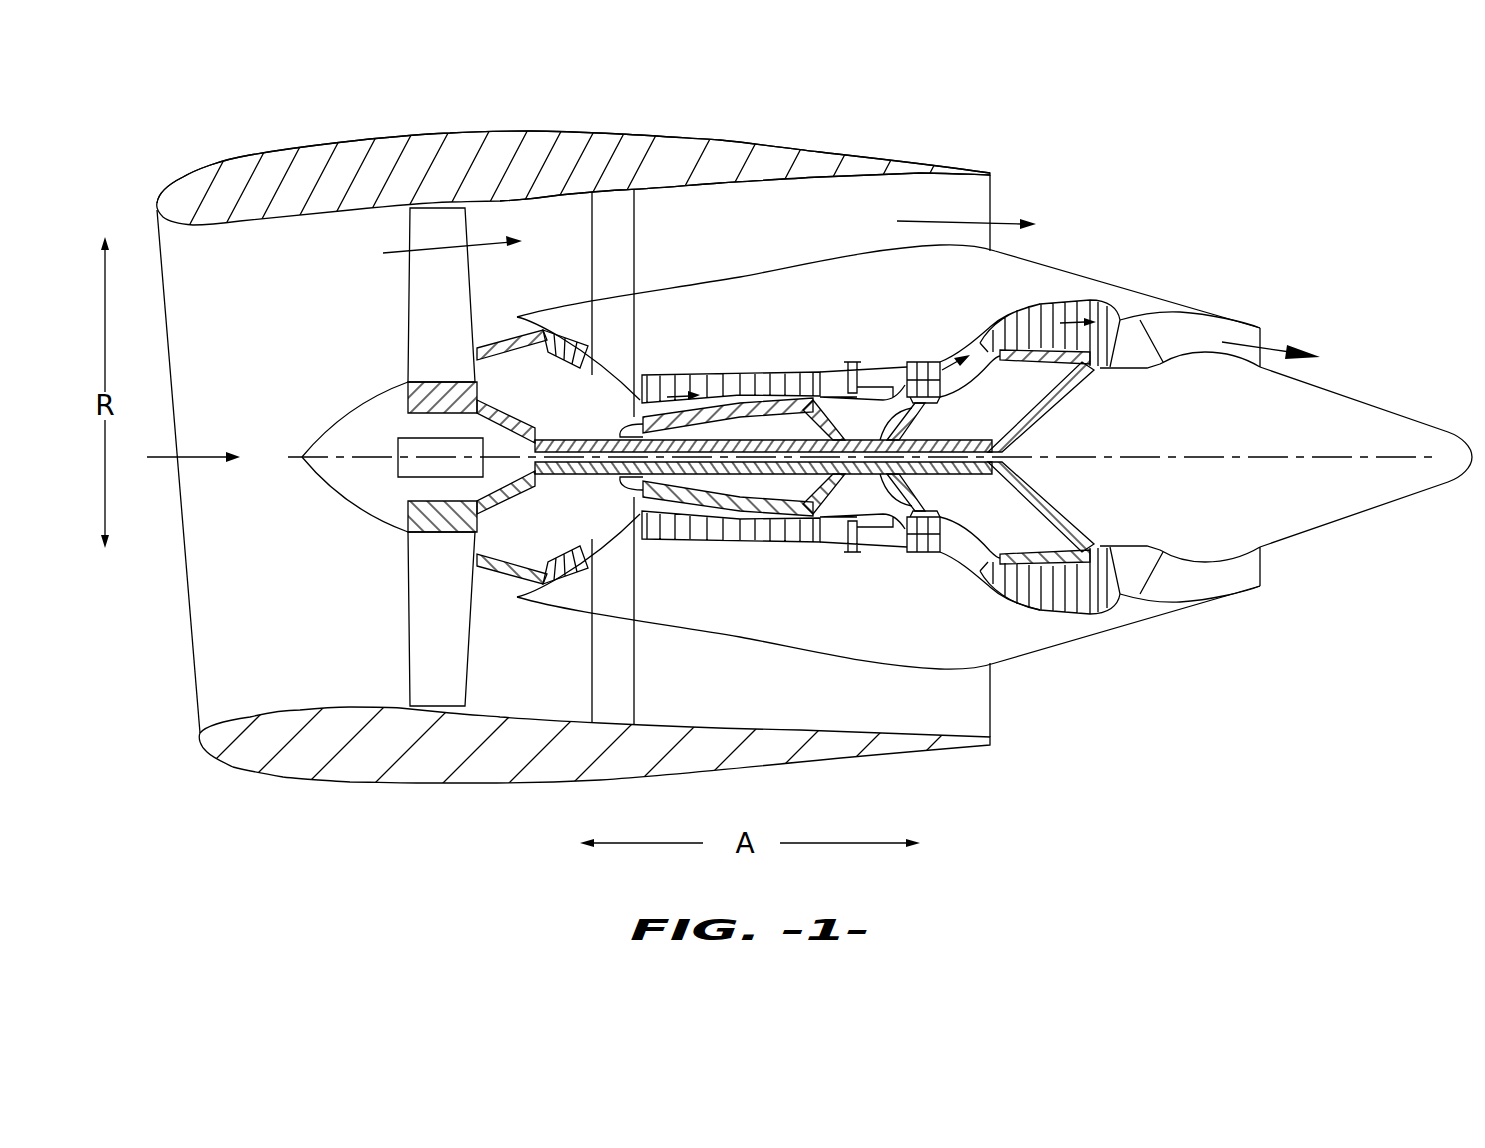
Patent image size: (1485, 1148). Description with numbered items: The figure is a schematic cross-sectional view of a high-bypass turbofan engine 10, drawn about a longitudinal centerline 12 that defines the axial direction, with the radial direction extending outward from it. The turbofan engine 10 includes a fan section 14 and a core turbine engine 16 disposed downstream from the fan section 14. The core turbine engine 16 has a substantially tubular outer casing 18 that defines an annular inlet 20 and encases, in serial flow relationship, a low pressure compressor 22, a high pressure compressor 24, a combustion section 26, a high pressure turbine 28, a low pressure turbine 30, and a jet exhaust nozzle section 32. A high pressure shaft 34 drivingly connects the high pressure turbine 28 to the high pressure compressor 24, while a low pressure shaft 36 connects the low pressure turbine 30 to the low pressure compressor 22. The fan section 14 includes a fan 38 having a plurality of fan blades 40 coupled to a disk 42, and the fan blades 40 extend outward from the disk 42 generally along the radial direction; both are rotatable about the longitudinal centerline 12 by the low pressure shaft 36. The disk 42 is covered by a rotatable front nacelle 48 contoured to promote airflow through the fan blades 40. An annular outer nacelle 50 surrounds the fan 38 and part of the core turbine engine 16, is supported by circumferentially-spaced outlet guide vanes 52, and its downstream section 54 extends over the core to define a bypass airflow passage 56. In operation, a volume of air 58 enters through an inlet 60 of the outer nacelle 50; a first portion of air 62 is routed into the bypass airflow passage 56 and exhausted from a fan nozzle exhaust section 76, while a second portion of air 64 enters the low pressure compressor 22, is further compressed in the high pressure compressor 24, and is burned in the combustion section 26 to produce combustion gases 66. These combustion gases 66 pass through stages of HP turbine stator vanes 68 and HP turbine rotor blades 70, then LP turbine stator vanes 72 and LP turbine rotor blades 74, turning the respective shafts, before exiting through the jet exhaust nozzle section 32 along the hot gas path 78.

The turbofan engine 10 is at (1247, 204).
The longitudinal centerline 12 is at (1173, 453).
The fan section 14 is at (492, 117).
The core turbine engine 16 is at (808, 326).
The outer casing 18 is at (833, 653).
The annular inlet 20 is at (531, 582).
The low pressure compressor 22 is at (593, 555).
The high pressure compressor 24 is at (667, 536).
The combustion section 26 is at (865, 543).
The high pressure turbine 28 is at (943, 537).
The low pressure turbine 30 is at (1095, 615).
The jet exhaust nozzle section 32 is at (1263, 333).
The high pressure shaft 34 is at (923, 412).
The low pressure shaft 36 is at (590, 437).
The fan 38 is at (396, 297).
The fan blades 40 is at (407, 650).
The disk 42 is at (405, 393).
The front nacelle 48 is at (327, 427).
The outer nacelle 50 is at (477, 787).
The outlet guide vanes 52 is at (637, 217).
The downstream section 54 is at (798, 142).
The bypass airflow passage 56 is at (787, 238).
The volume of air 58 is at (190, 457).
The inlet 60 is at (190, 697).
The first portion of air 62 is at (423, 247).
The second portion of air 64 is at (517, 329).
The combustion gases 66 is at (940, 365).
The HP turbine stator vanes 68 is at (913, 550).
The HP turbine rotor blades 70 is at (925, 542).
The LP turbine stator vanes 72 is at (1000, 587).
The LP turbine rotor blades 74 is at (1013, 590).
The fan nozzle exhaust section 76 is at (993, 200).
The hot gas path 78 is at (978, 335).